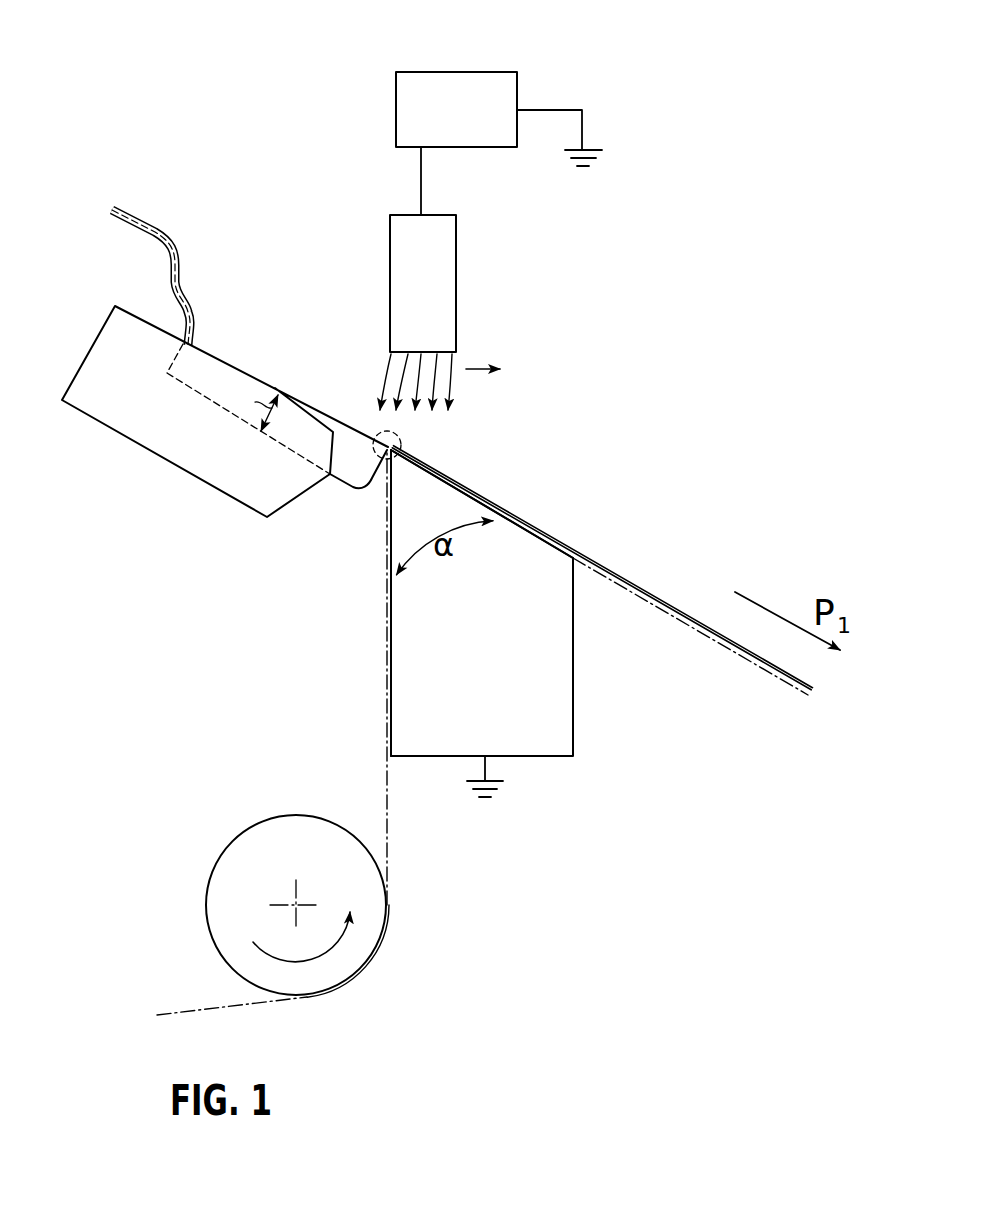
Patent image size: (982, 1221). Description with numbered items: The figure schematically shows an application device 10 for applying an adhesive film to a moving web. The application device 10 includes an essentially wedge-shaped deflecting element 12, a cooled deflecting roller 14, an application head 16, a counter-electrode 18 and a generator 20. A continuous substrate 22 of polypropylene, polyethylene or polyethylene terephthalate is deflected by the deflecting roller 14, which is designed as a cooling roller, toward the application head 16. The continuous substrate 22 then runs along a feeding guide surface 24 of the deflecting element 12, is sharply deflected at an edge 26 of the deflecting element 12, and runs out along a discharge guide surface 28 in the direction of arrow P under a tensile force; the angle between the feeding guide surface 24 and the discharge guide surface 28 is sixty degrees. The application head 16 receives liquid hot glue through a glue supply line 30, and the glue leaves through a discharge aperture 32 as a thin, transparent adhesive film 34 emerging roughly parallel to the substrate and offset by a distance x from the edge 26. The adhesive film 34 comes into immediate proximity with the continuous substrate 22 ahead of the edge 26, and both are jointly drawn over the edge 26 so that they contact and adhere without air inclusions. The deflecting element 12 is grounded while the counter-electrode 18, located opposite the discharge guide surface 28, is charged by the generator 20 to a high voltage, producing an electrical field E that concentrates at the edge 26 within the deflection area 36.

The application device 10 is at (145, 50).
The deflecting element 12 is at (480, 623).
The deflecting roller 14 is at (250, 825).
The application head 16 is at (160, 458).
The counter-electrode 18 is at (456, 275).
The generator 20 is at (466, 72).
The continuous substrate 22 is at (387, 822).
The feeding guide surface 24 is at (391, 653).
The edge 26 is at (401, 440).
The discharge guide surface 28 is at (521, 524).
The glue supply line 30 is at (157, 228).
The discharge aperture 32 is at (467, 732).
The adhesive film 34 is at (682, 612).
The deflection area 36 is at (379, 440).